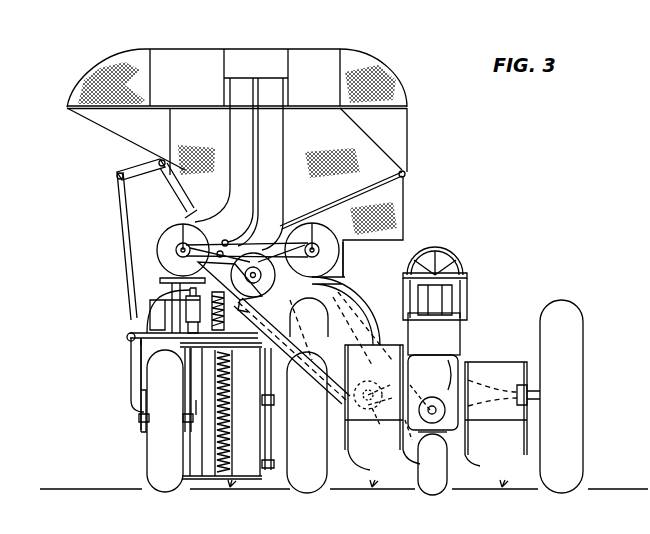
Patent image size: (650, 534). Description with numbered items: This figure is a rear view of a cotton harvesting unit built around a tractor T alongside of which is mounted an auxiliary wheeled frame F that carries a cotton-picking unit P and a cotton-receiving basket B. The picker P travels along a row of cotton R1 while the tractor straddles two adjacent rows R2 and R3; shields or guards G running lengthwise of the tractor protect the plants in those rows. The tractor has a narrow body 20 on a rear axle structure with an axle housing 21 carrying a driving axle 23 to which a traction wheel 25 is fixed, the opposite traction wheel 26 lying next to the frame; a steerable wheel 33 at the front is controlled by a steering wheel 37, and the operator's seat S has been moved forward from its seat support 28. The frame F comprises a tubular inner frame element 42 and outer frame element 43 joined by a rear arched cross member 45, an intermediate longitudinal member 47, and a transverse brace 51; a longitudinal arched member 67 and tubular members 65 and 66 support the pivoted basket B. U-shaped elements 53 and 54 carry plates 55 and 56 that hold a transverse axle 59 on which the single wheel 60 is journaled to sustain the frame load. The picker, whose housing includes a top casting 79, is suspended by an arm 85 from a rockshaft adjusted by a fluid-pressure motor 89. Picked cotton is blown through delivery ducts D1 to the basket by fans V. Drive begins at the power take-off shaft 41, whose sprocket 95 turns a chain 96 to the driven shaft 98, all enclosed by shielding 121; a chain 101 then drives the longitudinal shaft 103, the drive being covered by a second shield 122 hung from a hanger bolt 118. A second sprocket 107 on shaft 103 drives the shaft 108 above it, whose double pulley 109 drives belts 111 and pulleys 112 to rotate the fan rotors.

The basket B is at (139, 47).
The delivery ducts D1 is at (243, 150).
The tubular member 65 is at (128, 214).
The tubular member 66 is at (172, 207).
The fans or blowers V is at (160, 235).
The pulleys 112 is at (241, 228).
The longitudinal shaft 108 is at (247, 239).
The belts 111 is at (266, 275).
The longitudinal shaft 103 is at (247, 301).
The longitudinal arched member 67 is at (345, 266).
The double pulley 109 is at (346, 311).
The chain 101 is at (262, 299).
The hanger bolts 118 is at (341, 328).
The fluid-pressure motor 89 is at (171, 295).
The arm 85 is at (150, 306).
The rear arched cross member 45 is at (175, 298).
The top casting 79 is at (188, 312).
The intermediate longitudinal member 47 is at (235, 348).
The auxiliary wheeled frame F is at (124, 333).
The outer frame element 43 is at (127, 339).
The transverse brace 51 is at (150, 342).
The U-shaped element 54 is at (137, 370).
The plate 56 is at (140, 410).
The transverse axle 59 is at (137, 420).
The plate 55 is at (185, 423).
The U-shaped element 53 is at (203, 416).
The wheel 60 is at (148, 463).
The cotton-picking unit P is at (196, 480).
The row of cotton R1 is at (344, 499).
The row of cotton R2 is at (370, 499).
The row of cotton R3 is at (510, 499).
The traction wheel 26 is at (310, 490).
The second shield 122 is at (310, 378).
The second sprocket 107 is at (268, 343).
The steering wheel 37 is at (432, 252).
The operator's seat S is at (472, 278).
The tractor T is at (483, 300).
The seat support 28 is at (458, 335).
The inner frame element 42 is at (374, 385).
The driven shaft 98 is at (368, 413).
The driving chain or belt 96 is at (392, 420).
The sprocket or pulley 95 is at (425, 430).
The tractor body 20 is at (448, 430).
The shielding 121 is at (412, 397).
The power take-off shaft 41 is at (432, 450).
The steerable wheel 33 is at (433, 493).
The axle housing 21 is at (498, 378).
The driving axle 23 is at (533, 400).
The traction wheel 25 is at (573, 485).
The shields or guards G is at (421, 467).